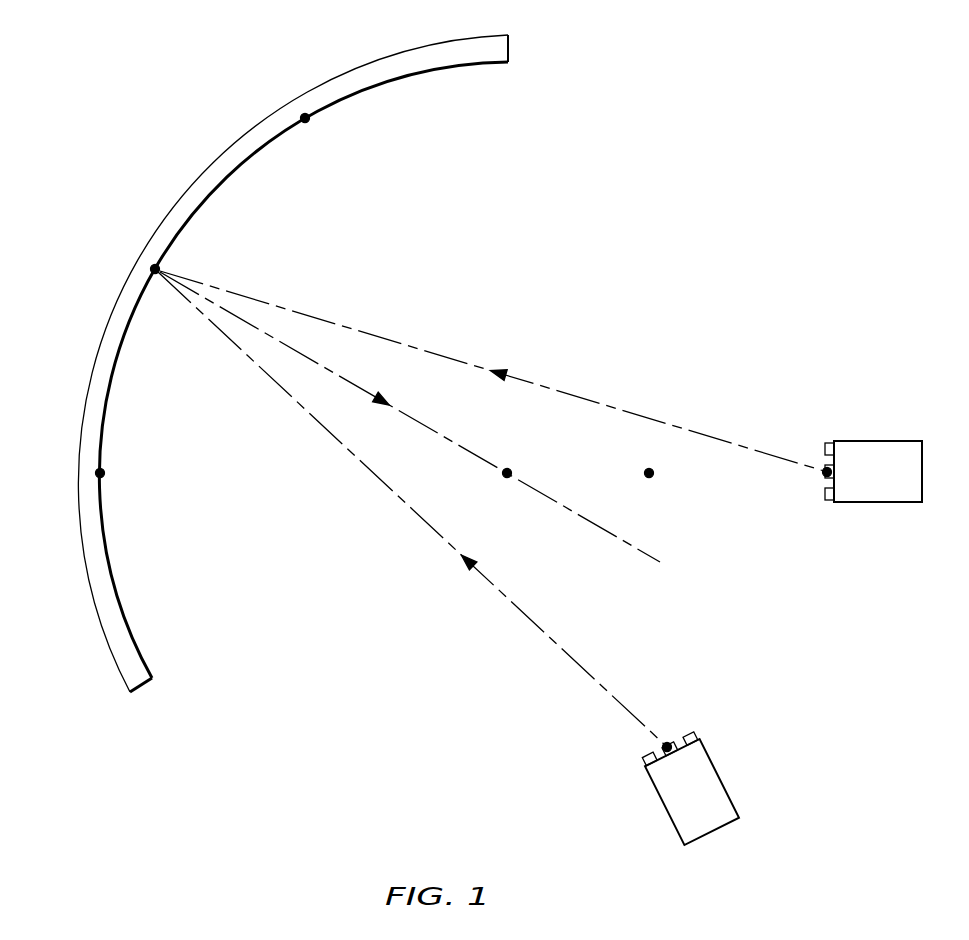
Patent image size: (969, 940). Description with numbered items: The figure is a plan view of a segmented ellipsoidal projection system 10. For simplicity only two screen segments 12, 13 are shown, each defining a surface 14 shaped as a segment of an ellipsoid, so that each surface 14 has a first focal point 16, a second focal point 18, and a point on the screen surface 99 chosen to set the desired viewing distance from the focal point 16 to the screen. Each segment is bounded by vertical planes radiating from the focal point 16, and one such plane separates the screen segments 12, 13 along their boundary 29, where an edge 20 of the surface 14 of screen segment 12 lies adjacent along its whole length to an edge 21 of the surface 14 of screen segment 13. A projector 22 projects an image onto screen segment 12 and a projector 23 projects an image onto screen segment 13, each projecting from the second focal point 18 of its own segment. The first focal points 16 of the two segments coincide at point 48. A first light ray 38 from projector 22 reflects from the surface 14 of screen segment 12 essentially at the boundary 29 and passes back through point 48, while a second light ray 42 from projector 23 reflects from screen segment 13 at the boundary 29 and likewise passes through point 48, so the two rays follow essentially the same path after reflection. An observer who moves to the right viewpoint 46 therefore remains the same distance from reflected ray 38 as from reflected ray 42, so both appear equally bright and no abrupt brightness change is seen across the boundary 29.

The projection system 10 is at (592, 240).
The screen segment 12 is at (269, 346).
The screen segment 13 is at (73, 432).
The surface 14 is at (467, 66).
The first focal point 16 is at (500, 475).
The second focal point 18 is at (823, 476).
The edge 20 is at (147, 262).
The edge 21 is at (147, 269).
The projector 22 is at (727, 772).
The projector 23 is at (882, 505).
The boundary 29 is at (161, 268).
The first light ray 38 is at (512, 605).
The second light ray 42 is at (560, 391).
The right viewpoint 46 is at (656, 480).
The point 48 is at (514, 470).
The point on the screen surface 99 is at (307, 120).